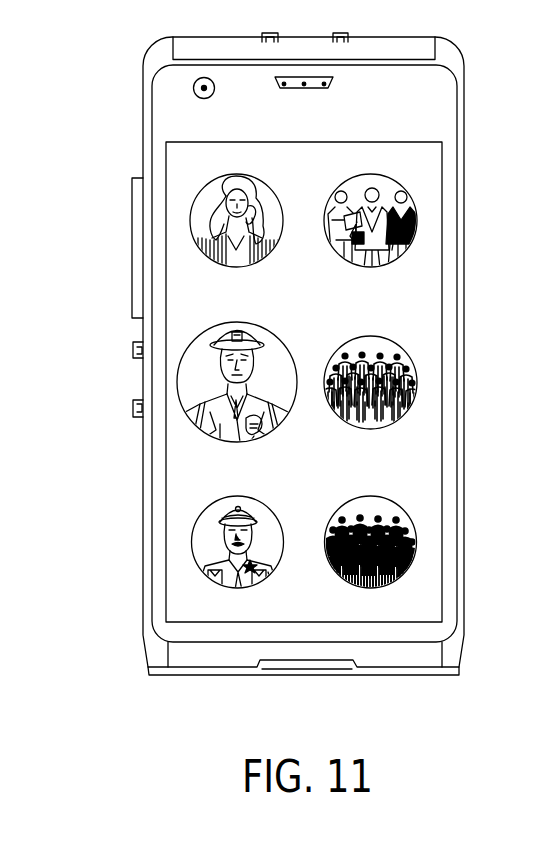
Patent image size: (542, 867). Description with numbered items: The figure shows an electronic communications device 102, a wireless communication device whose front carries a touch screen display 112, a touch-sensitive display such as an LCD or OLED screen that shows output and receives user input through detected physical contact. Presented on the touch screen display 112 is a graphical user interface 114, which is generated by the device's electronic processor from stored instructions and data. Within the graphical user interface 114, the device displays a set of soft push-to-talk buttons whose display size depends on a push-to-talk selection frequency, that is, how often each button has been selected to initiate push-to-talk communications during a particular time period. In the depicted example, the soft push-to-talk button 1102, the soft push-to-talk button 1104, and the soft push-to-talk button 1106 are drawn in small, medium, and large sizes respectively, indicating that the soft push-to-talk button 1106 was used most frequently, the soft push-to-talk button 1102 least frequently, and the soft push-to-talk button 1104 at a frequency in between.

The electronic communications device 102 is at (143, 123).
The touch screen display 112 is at (165, 385).
The graphical user interface 114 is at (414, 578).
The soft push-to-talk button 1102 is at (415, 542).
The soft push-to-talk button 1104 is at (415, 380).
The soft push-to-talk button 1106 is at (415, 225).